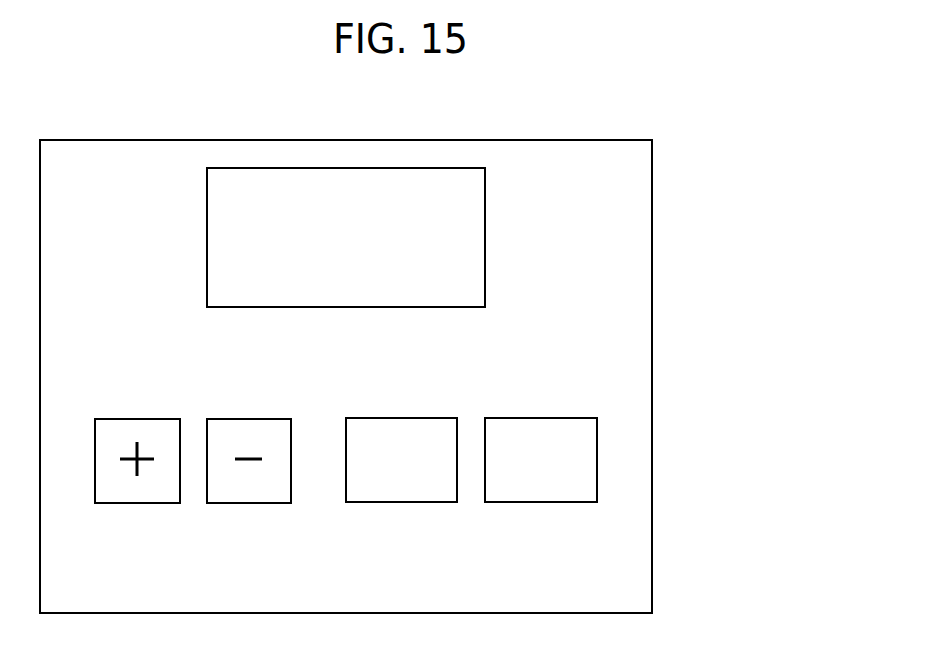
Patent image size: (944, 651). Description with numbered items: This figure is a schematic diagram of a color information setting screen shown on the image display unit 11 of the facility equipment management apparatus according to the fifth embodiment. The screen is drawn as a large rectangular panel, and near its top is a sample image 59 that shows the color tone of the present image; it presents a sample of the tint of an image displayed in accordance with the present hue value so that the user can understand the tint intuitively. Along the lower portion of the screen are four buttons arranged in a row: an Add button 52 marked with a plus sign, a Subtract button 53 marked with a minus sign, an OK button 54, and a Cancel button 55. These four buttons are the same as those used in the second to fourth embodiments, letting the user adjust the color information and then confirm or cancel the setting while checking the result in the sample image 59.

The image display unit 11 is at (530, 139).
The sample image 59 is at (485, 266).
The Add button 52 is at (154, 503).
The Subtract button 53 is at (265, 503).
The OK button 54 is at (417, 502).
The Cancel button 55 is at (558, 502).